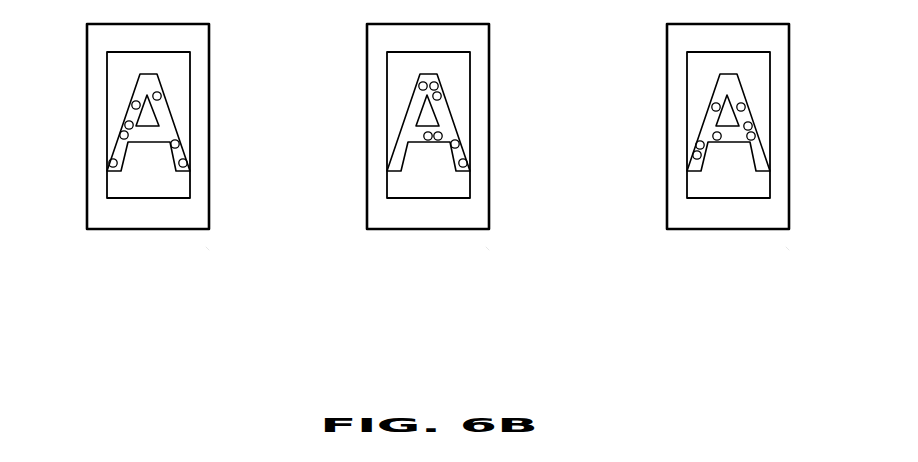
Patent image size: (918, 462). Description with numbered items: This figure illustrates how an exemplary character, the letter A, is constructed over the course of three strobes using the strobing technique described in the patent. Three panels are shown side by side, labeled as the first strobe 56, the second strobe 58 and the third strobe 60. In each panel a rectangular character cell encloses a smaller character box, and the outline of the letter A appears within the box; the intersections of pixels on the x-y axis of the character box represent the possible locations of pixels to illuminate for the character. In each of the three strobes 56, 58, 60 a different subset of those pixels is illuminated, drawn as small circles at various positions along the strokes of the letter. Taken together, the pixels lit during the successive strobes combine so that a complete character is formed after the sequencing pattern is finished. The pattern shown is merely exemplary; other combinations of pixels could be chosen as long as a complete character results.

The first card state 56 is at (206, 247).
The second card state 58 is at (486, 247).
The third card state 60 is at (786, 247).